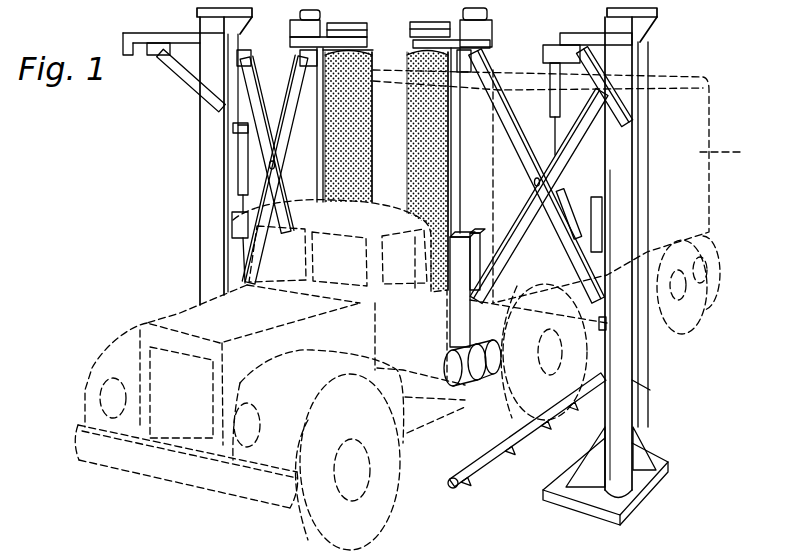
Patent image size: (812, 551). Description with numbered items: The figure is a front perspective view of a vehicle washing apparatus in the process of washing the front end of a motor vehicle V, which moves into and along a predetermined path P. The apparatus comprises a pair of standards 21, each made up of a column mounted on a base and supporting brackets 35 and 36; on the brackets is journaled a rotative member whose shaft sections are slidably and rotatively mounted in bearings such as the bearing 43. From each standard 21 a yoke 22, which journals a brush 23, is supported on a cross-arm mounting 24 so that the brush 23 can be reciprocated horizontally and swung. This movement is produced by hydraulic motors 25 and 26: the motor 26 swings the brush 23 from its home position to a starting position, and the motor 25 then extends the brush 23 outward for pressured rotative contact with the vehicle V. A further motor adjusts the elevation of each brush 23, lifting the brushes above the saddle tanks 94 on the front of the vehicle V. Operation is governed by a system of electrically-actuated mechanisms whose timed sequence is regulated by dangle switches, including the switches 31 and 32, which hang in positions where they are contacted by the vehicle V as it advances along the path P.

The standards 21 is at (283, 69).
The yoke 22 is at (389, 44).
The brush 23 is at (407, 146).
The cross-arm mounting 24 is at (543, 250).
The hydraulic motor 25 is at (238, 163).
The hydraulic motor 26 is at (210, 98).
The dangle switch 31 is at (215, 77).
The dangle switch 32 is at (620, 200).
The bracket 35 is at (648, 393).
The bracket 36 is at (643, 127).
The bearing 43 is at (600, 322).
The saddle tanks 94 is at (477, 378).
The predetermined path P is at (460, 451).
The motor vehicle V is at (416, 310).